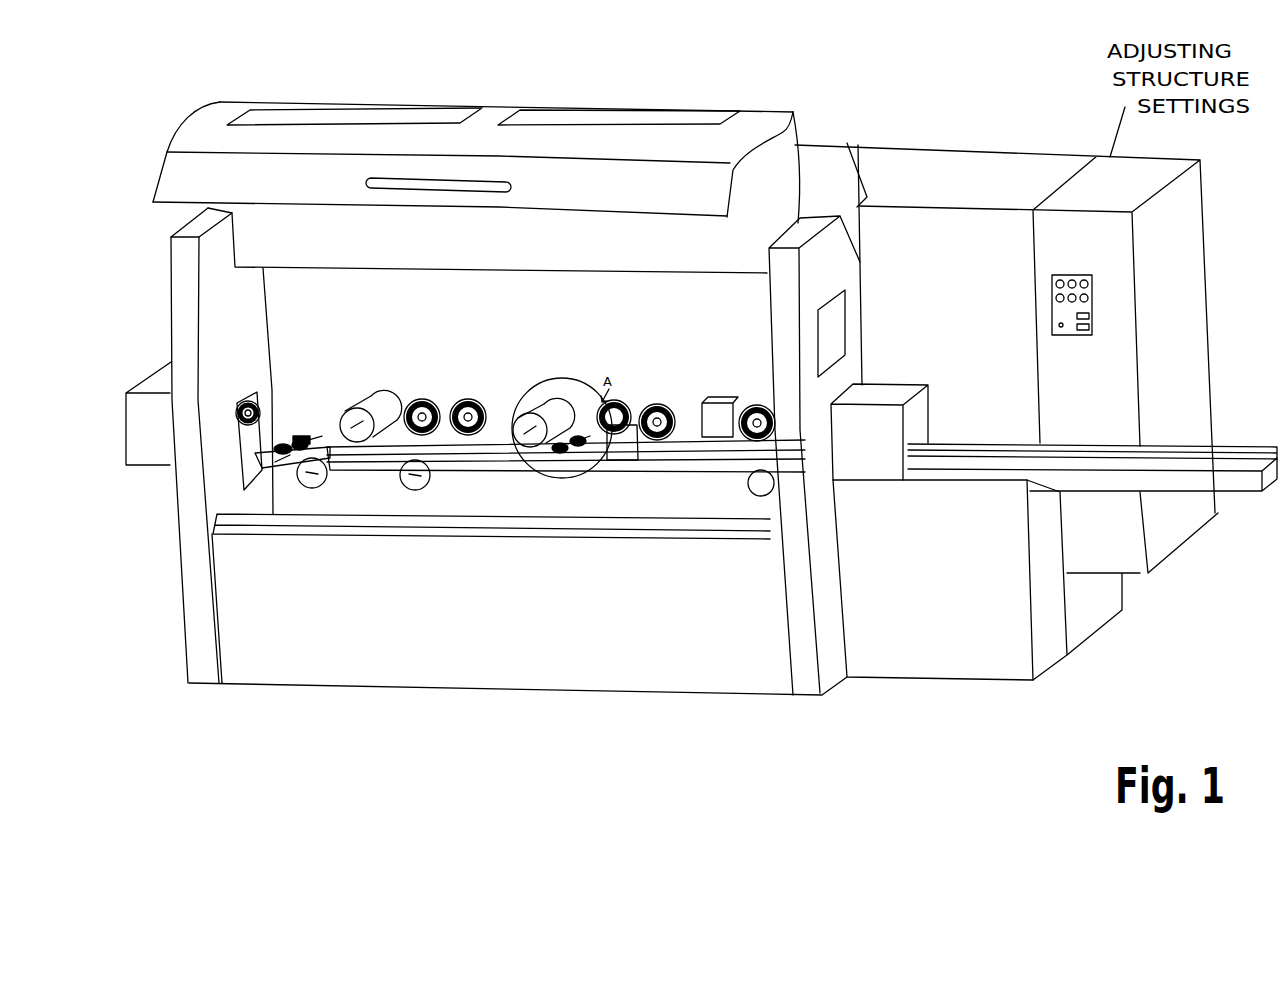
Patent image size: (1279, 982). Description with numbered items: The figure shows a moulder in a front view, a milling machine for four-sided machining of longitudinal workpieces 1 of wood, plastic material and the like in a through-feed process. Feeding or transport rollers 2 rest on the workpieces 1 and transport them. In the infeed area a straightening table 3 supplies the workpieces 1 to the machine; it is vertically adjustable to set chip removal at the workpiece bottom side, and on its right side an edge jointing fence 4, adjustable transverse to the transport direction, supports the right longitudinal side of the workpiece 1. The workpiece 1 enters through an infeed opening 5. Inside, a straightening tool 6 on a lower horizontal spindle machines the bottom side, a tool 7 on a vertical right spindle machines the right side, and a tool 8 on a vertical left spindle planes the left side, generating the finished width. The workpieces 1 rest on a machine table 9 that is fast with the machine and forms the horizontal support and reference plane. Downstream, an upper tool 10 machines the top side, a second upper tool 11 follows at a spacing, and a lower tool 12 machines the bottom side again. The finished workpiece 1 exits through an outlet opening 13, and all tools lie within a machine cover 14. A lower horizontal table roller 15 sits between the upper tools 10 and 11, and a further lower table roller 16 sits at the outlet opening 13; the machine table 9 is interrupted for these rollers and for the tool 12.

The workpiece 1 is at (690, 445).
The feeding or transport rollers 2 is at (467, 398).
The straightening table 3 is at (1200, 478).
The edge jointing fence 4 is at (1228, 455).
The infeed opening 5 is at (915, 428).
The straightening tool 6 is at (761, 497).
The tool 7 is at (724, 404).
The tool 8 is at (628, 452).
The machine table 9 is at (503, 453).
The tool 10 is at (515, 425).
The second upper tool 11 is at (350, 420).
The tool 12 is at (310, 483).
The outlet opening 13 is at (242, 445).
The machine cover 14 is at (237, 332).
The lower horizontal table roller 15 is at (413, 477).
The horizontal lower table roller 16 is at (270, 455).